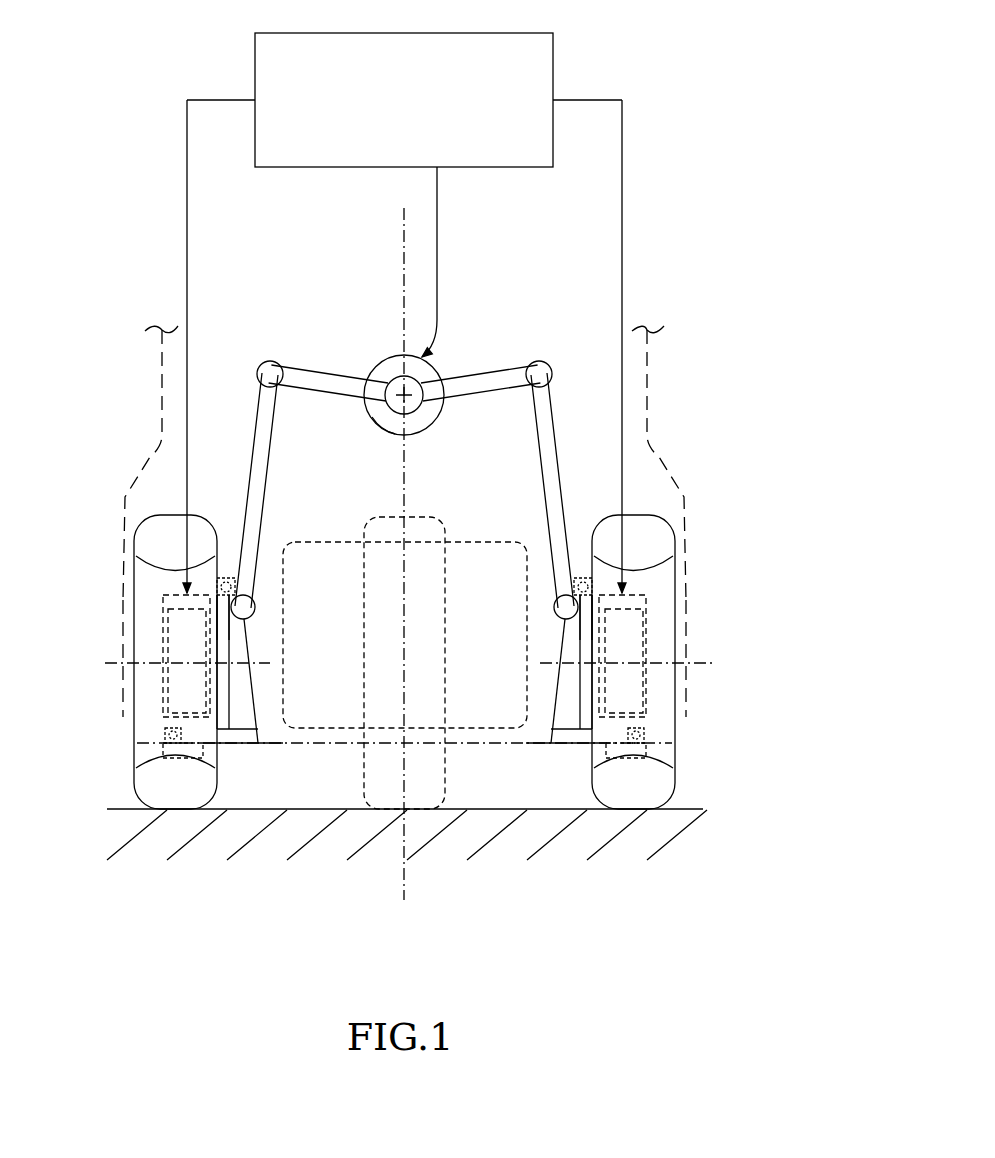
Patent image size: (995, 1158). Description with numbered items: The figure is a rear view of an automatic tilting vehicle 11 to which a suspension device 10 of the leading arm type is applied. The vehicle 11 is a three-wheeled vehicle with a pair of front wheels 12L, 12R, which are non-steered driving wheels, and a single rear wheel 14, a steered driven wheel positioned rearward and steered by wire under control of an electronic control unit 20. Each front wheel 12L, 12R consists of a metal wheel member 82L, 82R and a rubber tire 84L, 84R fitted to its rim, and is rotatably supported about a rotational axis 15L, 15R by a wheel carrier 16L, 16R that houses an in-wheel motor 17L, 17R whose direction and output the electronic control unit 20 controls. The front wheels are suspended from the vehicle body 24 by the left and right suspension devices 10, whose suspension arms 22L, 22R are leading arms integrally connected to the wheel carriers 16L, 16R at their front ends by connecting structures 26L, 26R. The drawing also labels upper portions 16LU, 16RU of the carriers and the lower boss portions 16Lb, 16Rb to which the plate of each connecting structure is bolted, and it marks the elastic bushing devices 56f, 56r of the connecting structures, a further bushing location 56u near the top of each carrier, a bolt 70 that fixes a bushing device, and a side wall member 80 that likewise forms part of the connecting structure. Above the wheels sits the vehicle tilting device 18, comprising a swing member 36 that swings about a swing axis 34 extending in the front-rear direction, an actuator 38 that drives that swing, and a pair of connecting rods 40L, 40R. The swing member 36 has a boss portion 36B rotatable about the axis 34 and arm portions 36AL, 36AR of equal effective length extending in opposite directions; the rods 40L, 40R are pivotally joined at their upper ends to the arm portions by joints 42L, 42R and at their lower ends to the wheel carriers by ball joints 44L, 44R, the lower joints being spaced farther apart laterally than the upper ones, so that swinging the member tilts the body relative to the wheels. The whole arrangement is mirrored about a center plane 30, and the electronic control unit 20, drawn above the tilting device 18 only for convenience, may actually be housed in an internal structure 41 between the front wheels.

The suspension device 10 is at (158, 508).
The automatic tilting vehicle 11 is at (148, 60).
The front wheel 12L is at (134, 577).
The front wheel 12R is at (676, 575).
The rear wheel 14 is at (415, 514).
The rotational axis 15L is at (107, 662).
The rotational axis 15R is at (700, 662).
The wheel carrier 16L is at (231, 690).
The wheel carrier 16R is at (579, 690).
The left strut upper portion 16LU is at (235, 578).
The right strut upper portion 16RU is at (572, 578).
The left strut lower portion 16Lb is at (152, 757).
The boss portions 16Rb is at (662, 757).
The in-wheel motor 17L is at (162, 612).
The in-wheel motor 17R is at (648, 625).
The vehicle tilting device 18 is at (524, 316).
The electronic control unit 20 is at (393, 125).
The suspension arm 22L is at (242, 748).
The suspension arm 22R is at (566, 748).
The vehicle body 24 is at (660, 348).
The connecting structure 26L is at (258, 752).
The connecting structure 26R is at (551, 752).
The center plane 30 is at (401, 245).
The swing axis 34 is at (413, 404).
The swing member 36 is at (393, 348).
The arm portion 36AL is at (310, 367).
The arm portion 36AR is at (470, 366).
The boss portion 36B is at (394, 362).
The actuator 38 is at (385, 418).
The connecting rod 40L is at (276, 490).
The connecting rod 40R is at (529, 490).
The internal structure 41 is at (350, 538).
The joint 42L is at (259, 365).
The joint 42R is at (548, 364).
The joint 44L is at (256, 607).
The joint 44R is at (552, 607).
The upper joint 56u is at (225, 577).
The elastic bushing device 56f is at (162, 735).
The elastic bushing device 56r is at (652, 735).
The bolt 70 is at (127, 808).
The side wall member 80 is at (252, 647).
The wheel member 82L is at (123, 688).
The wheel member 82R is at (688, 688).
The tire 84L is at (134, 522).
The tire 84R is at (670, 522).